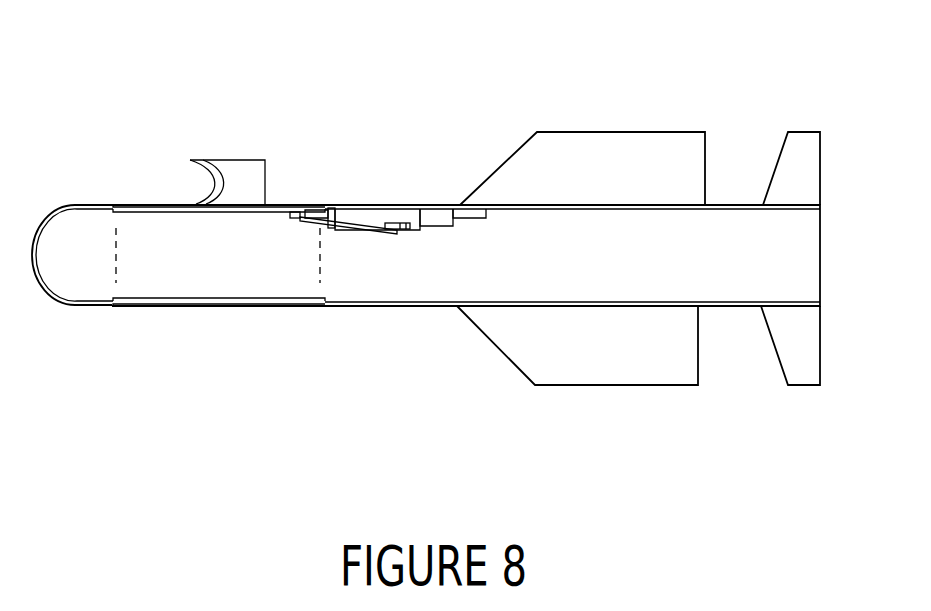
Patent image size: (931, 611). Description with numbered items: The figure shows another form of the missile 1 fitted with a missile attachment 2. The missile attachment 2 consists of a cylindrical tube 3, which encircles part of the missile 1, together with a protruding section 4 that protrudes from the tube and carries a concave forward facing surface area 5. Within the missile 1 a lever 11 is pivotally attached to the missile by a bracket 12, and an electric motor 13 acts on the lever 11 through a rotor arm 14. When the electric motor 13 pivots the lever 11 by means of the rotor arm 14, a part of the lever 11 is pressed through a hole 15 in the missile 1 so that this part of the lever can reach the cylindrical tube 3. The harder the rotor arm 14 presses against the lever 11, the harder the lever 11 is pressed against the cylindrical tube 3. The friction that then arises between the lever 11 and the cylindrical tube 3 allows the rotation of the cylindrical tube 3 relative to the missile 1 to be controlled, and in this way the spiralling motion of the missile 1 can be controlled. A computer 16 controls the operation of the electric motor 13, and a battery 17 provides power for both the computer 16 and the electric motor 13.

The missile 1 is at (86, 310).
The missile attachment 2 is at (178, 313).
The cylindrical tube 3 is at (283, 310).
The protruding section 4 is at (214, 153).
The concave forward facing surface area 5 is at (185, 190).
The lever 11 is at (350, 208).
The bracket 12 is at (330, 208).
The electric motor 13 is at (418, 212).
The rotor arm 14 is at (392, 222).
The hole 15 is at (292, 217).
The computer 16 is at (435, 222).
The battery 17 is at (470, 220).